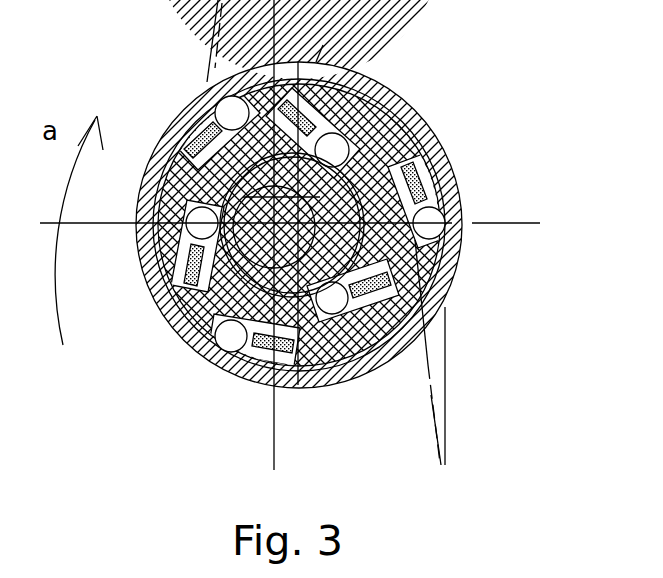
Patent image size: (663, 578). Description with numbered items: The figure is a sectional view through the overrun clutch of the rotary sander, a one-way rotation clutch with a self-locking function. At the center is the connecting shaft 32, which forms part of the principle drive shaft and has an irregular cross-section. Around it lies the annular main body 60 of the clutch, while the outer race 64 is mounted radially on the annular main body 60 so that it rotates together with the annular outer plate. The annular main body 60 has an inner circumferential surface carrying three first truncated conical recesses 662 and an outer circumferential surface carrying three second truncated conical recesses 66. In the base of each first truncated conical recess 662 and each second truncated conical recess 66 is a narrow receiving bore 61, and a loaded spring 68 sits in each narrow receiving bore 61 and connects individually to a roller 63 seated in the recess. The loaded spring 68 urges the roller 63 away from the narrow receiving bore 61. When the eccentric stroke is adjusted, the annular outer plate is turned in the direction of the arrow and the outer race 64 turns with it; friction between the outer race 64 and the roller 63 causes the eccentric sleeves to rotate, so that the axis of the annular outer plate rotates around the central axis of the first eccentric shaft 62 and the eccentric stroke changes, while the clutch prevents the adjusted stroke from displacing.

The connecting shaft 32 is at (186, 206).
The annular main body 60 is at (440, 320).
The narrow receiving bore 61 is at (443, 150).
The first eccentric shaft 62 is at (312, 100).
The roller 63 is at (463, 260).
The outer race 64 is at (400, 104).
The second truncated conical recess 66 is at (205, 322).
The loaded spring 68 is at (445, 198).
The first truncated conical recess 662 is at (372, 345).